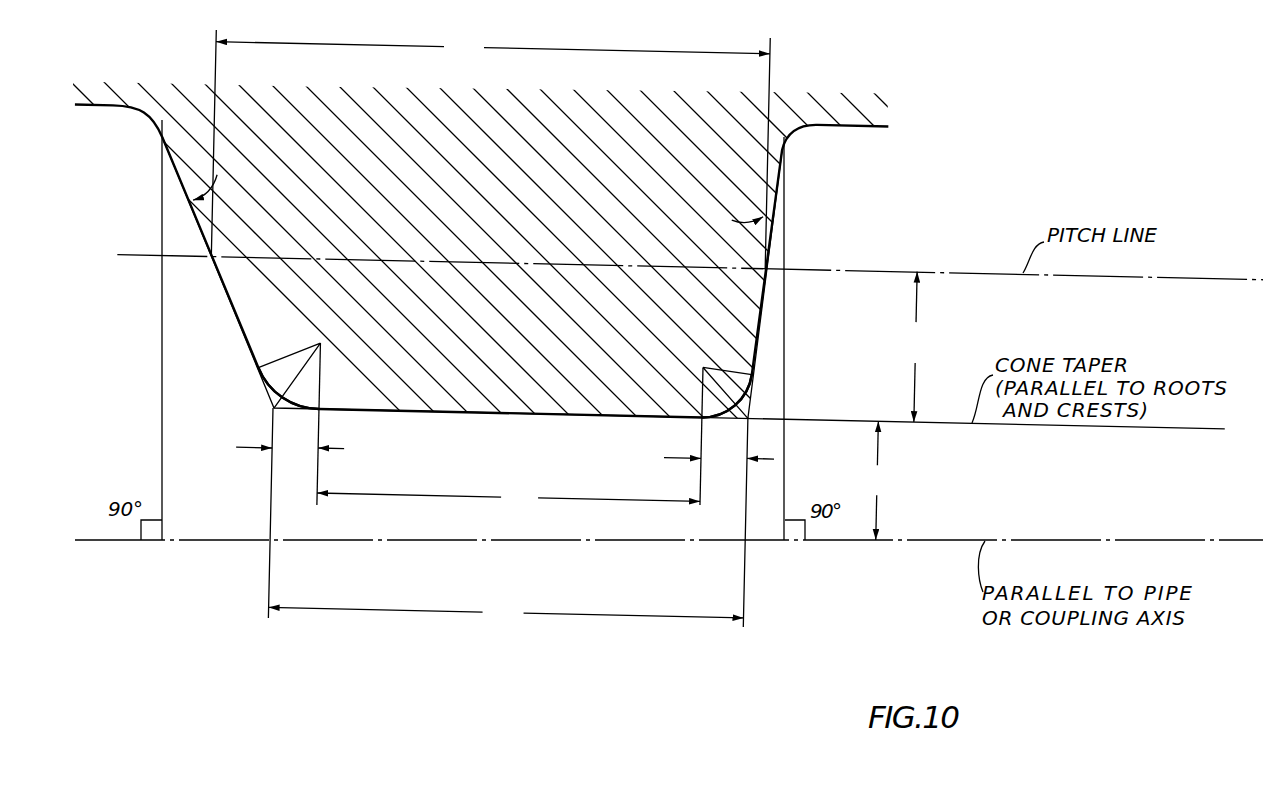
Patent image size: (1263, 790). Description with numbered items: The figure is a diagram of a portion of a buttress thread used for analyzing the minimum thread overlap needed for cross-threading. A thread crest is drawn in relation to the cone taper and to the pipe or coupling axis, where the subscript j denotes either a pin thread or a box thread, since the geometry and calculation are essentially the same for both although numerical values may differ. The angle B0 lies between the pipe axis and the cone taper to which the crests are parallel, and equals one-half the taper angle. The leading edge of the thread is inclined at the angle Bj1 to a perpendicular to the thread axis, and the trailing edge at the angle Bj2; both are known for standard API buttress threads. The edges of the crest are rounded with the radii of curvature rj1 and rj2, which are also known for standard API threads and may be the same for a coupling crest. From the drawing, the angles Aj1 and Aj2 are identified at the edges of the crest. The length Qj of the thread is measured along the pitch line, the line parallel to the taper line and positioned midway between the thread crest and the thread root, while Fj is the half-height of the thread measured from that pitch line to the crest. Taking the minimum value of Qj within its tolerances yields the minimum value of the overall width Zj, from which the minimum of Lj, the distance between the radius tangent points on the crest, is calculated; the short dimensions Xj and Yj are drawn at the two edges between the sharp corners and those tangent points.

The length of the thread along the pitch line Qj is at (490, 147).
The leading edge angle Bj1 is at (156, 207).
The trailing edge angle Bj2 is at (784, 207).
The radius of curvature rj1 is at (289, 380).
The radius of curvature rj2 is at (732, 381).
The crest edge angle Aj1 is at (322, 392).
The crest edge angle Aj2 is at (700, 395).
The crest edge distance Xj is at (302, 456).
The crest edge distance Yj is at (705, 461).
The distance between the radius tangent points on the crest Lj is at (509, 494).
The overall crest width Zj is at (508, 521).
The half-height of the thread Fj is at (913, 346).
The taper half-angle B0 is at (873, 480).